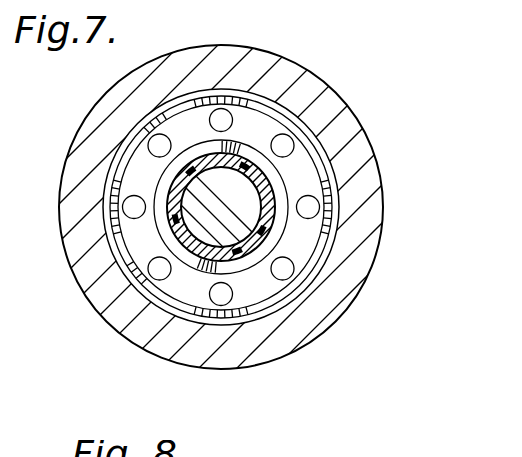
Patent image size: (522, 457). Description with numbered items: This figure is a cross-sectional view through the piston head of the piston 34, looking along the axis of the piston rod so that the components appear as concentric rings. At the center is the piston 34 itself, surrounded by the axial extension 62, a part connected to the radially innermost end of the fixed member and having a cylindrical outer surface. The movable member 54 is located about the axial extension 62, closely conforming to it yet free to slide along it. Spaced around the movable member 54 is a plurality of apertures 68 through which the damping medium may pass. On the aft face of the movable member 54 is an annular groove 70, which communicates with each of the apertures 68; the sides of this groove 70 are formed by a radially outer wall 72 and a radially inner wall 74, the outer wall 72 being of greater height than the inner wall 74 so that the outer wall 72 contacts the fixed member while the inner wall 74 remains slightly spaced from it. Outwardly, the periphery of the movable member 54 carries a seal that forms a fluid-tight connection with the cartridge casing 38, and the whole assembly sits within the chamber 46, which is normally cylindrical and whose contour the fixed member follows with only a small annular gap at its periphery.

The piston 34 is at (250, 200).
The cartridge casing 38 is at (102, 305).
The chamber 46 is at (233, 358).
The movable member 54 is at (303, 240).
The axial extension 62 is at (272, 130).
The apertures 68 is at (152, 138).
The annular groove 70 is at (305, 256).
The radially outer wall 72 is at (282, 303).
The radially inner wall 74 is at (148, 348).